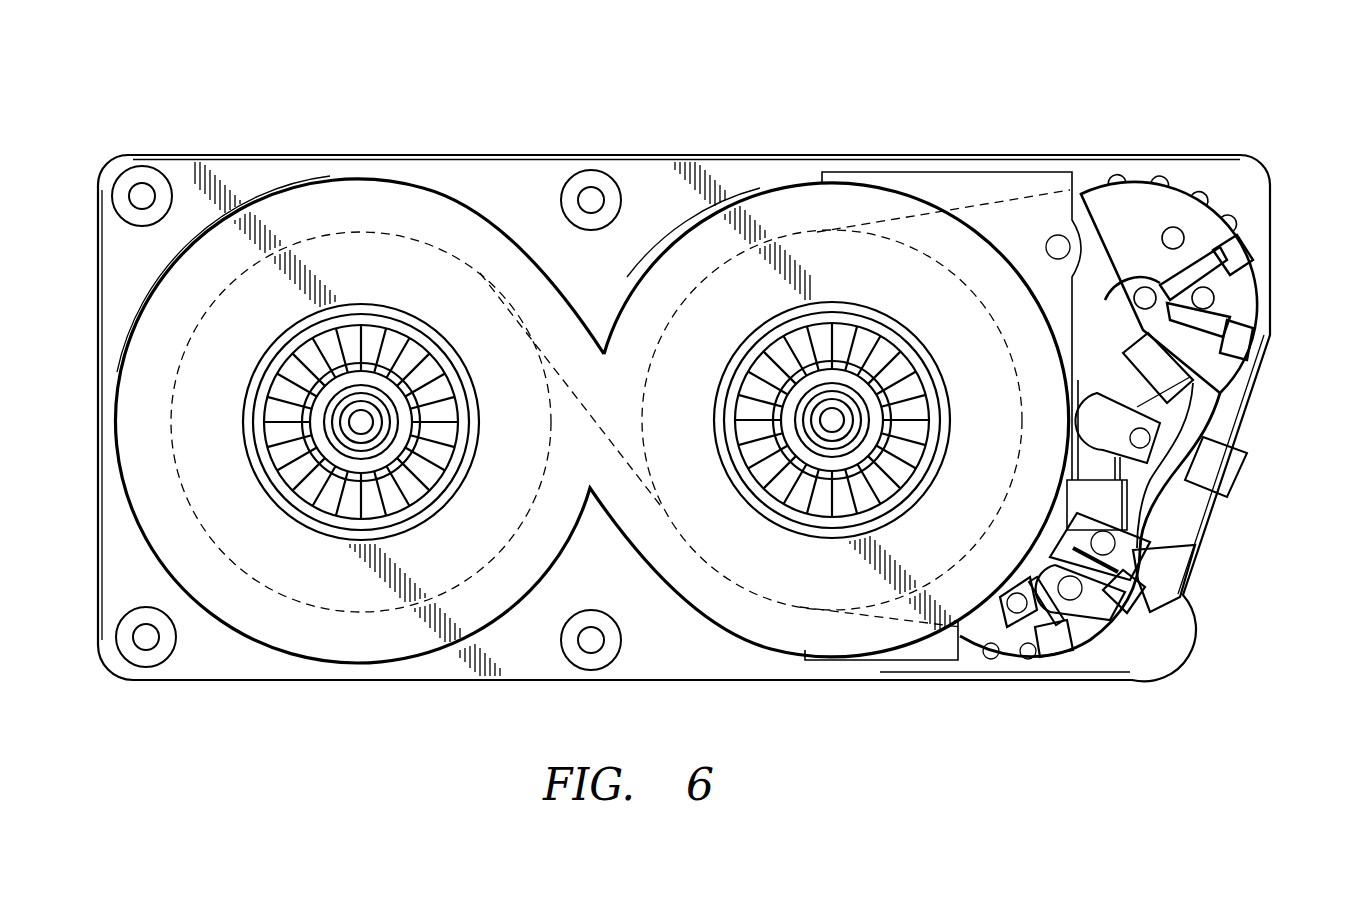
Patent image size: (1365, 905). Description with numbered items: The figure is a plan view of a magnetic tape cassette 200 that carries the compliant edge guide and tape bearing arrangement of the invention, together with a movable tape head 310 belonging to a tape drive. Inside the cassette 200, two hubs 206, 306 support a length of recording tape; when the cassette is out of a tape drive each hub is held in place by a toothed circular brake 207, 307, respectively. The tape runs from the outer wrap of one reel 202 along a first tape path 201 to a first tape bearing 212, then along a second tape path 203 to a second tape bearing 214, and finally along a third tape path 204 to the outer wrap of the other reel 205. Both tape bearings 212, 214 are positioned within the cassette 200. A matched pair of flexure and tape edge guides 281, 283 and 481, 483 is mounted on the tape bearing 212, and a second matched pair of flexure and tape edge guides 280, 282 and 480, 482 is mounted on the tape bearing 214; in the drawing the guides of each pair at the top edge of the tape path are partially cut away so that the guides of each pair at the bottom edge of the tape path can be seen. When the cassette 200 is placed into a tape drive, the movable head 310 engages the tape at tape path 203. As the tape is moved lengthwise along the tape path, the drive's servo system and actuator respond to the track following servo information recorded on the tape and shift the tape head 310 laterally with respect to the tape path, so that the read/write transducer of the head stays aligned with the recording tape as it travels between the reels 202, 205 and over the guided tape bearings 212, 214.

The tape cassette 200 is at (650, 105).
The tape path 201 is at (990, 200).
The reel 202 is at (817, 232).
The tape path 203 is at (1170, 510).
The tape path 204 is at (727, 583).
The reel 205 is at (545, 318).
The hub 206 is at (347, 470).
The toothed circular brake 207 is at (290, 478).
The tape bearing 212 is at (1127, 190).
The tape bearing 214 is at (1013, 637).
The flexure and tape edge guide 280 is at (1167, 617).
The flexure and tape edge guide 281 is at (1252, 340).
The flexure and tape edge guide 282 is at (1083, 665).
The flexure and tape edge guide 283 is at (1252, 262).
The hub 306 is at (812, 470).
The toothed circular brake 307 is at (760, 478).
The movable head 310 is at (1245, 478).
The flexure and tape edge guide 480 is at (1145, 598).
The flexure and tape edge guide 481 is at (1255, 355).
The flexure and tape edge guide 482 is at (1060, 648).
The flexure and tape edge guide 483 is at (1245, 250).